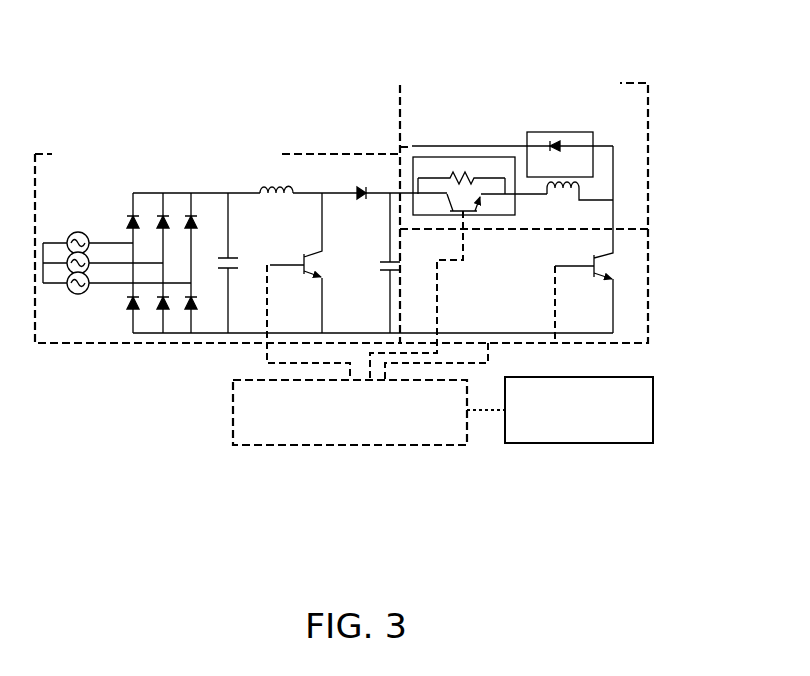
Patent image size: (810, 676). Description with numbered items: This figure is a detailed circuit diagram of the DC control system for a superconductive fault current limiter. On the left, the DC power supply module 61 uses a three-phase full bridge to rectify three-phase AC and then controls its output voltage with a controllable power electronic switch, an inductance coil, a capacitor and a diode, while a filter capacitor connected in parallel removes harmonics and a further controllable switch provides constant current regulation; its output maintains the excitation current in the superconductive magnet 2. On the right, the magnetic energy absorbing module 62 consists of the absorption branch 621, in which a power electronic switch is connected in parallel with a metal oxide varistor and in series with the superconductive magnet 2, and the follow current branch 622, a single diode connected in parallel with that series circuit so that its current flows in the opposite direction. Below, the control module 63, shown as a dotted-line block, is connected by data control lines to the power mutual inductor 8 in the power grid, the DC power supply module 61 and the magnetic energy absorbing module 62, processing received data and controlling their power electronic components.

The DC power supply module 61 is at (106, 136).
The magnetic energy absorbing module 62 is at (495, 61).
The absorption branch 621 is at (412, 145).
The follow current branch 622 is at (593, 132).
The superconductive magnet 2 is at (587, 187).
The control module 63 is at (232, 398).
The power mutual inductor 8 is at (655, 413).